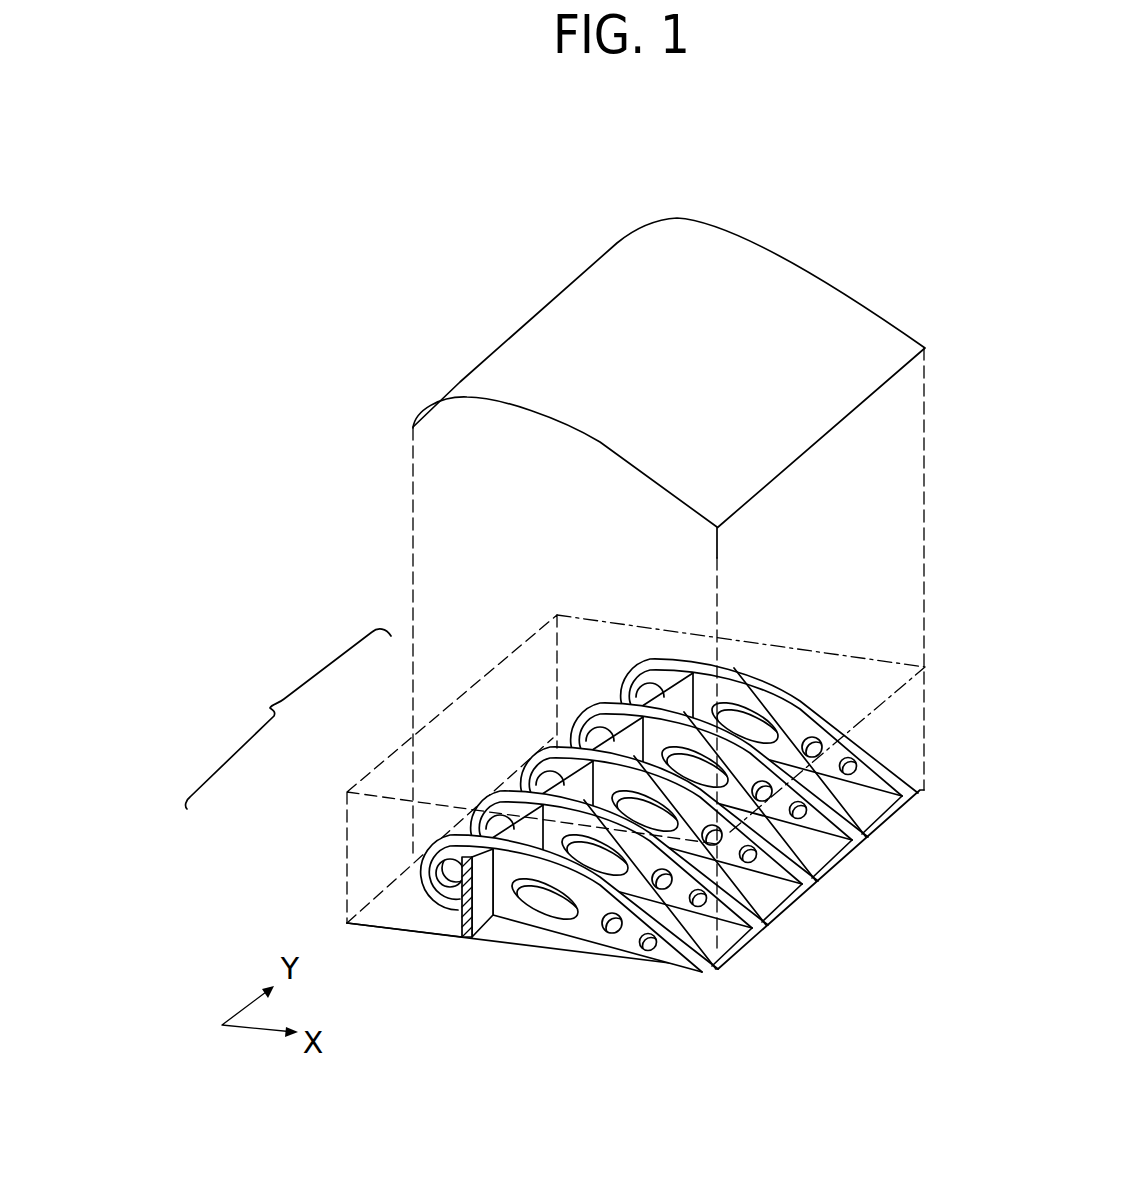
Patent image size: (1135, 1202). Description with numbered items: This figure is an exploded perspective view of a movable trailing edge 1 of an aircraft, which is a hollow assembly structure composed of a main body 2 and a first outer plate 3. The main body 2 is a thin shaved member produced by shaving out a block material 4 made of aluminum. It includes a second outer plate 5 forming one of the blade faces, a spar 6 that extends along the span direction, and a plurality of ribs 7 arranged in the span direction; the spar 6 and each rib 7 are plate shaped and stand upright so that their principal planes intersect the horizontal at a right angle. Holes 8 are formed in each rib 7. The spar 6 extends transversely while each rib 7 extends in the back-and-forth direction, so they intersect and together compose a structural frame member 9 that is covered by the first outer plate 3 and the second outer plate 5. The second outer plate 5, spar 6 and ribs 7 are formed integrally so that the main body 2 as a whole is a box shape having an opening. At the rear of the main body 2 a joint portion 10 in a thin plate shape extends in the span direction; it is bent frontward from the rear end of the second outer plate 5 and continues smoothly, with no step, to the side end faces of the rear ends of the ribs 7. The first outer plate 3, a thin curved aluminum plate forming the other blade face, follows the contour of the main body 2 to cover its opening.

The movable trailing edge 1 is at (393, 335).
The main body 2 is at (806, 890).
The first outer plate 3 is at (863, 400).
The block material 4 is at (887, 668).
The second outer plate 5 is at (475, 931).
The spar 6 is at (413, 925).
The ribs 7 is at (437, 848).
The holes 8 is at (553, 898).
The structural frame member 9 is at (288, 719).
The joint portion 10 is at (842, 857).